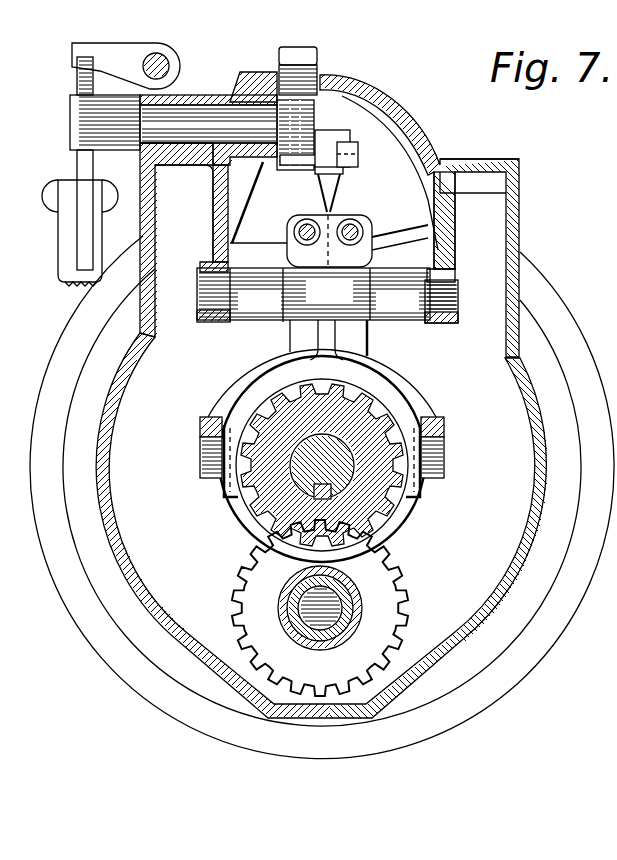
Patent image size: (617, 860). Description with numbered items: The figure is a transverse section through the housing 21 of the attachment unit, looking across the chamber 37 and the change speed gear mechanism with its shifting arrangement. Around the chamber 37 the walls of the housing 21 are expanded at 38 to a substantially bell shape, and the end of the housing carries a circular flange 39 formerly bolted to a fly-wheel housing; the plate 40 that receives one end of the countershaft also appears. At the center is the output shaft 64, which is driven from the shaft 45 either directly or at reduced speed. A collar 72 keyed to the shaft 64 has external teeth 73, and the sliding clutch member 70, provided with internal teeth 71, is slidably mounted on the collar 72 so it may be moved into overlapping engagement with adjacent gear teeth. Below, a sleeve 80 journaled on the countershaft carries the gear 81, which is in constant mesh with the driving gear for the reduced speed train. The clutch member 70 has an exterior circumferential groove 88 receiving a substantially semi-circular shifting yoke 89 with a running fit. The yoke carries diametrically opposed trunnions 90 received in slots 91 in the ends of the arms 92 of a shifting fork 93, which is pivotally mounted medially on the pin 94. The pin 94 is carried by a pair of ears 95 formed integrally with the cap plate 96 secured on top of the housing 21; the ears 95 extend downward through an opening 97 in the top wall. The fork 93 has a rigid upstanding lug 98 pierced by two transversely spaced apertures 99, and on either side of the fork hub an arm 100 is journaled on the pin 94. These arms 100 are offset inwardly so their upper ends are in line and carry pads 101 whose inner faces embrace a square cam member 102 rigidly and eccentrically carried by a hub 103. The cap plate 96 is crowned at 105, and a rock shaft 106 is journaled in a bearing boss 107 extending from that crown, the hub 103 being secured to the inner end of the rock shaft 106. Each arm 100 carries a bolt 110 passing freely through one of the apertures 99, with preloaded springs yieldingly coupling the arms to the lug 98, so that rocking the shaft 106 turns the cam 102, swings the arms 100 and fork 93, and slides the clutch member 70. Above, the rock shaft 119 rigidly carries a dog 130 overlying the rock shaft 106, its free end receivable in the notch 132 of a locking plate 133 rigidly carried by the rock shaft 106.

The housing 21 is at (140, 224).
The chamber 37 is at (465, 527).
The expanded wall portion 38 is at (96, 479).
The circular flange 39 is at (565, 316).
The plate 40 is at (7, 457).
The shaft 45 is at (360, 595).
The output shaft 64 is at (283, 408).
The sliding clutch member 70 is at (392, 524).
The internal teeth 71 is at (242, 507).
The collar 72 is at (395, 440).
The external teeth 73 is at (365, 440).
The sleeve 80 is at (328, 640).
The gear 81 is at (410, 618).
The exterior circumferential groove 88 is at (262, 515).
The shifting yoke 89 is at (290, 387).
The trunnions 90 is at (210, 462).
The slots 91 is at (200, 430).
The arms 92 is at (222, 396).
The shifting fork 93 is at (383, 342).
The pin 94 is at (212, 300).
The ears 95 is at (211, 208).
The cap plate 96 is at (475, 160).
The opening 97 is at (204, 177).
The lug 98 is at (290, 250).
The apertures 99 is at (305, 224).
The arm 100 is at (300, 232).
The pads 101 is at (335, 137).
The square cam member 102 is at (337, 157).
The hub 103 is at (313, 117).
The crown 105 is at (388, 108).
The rock shaft 106 is at (243, 122).
The bearing boss 107 is at (193, 100).
The bolt 110 is at (298, 228).
The rock shaft 119 is at (167, 60).
The dog 130 is at (128, 29).
The notch 132 is at (72, 113).
The locking plate 133 is at (77, 164).